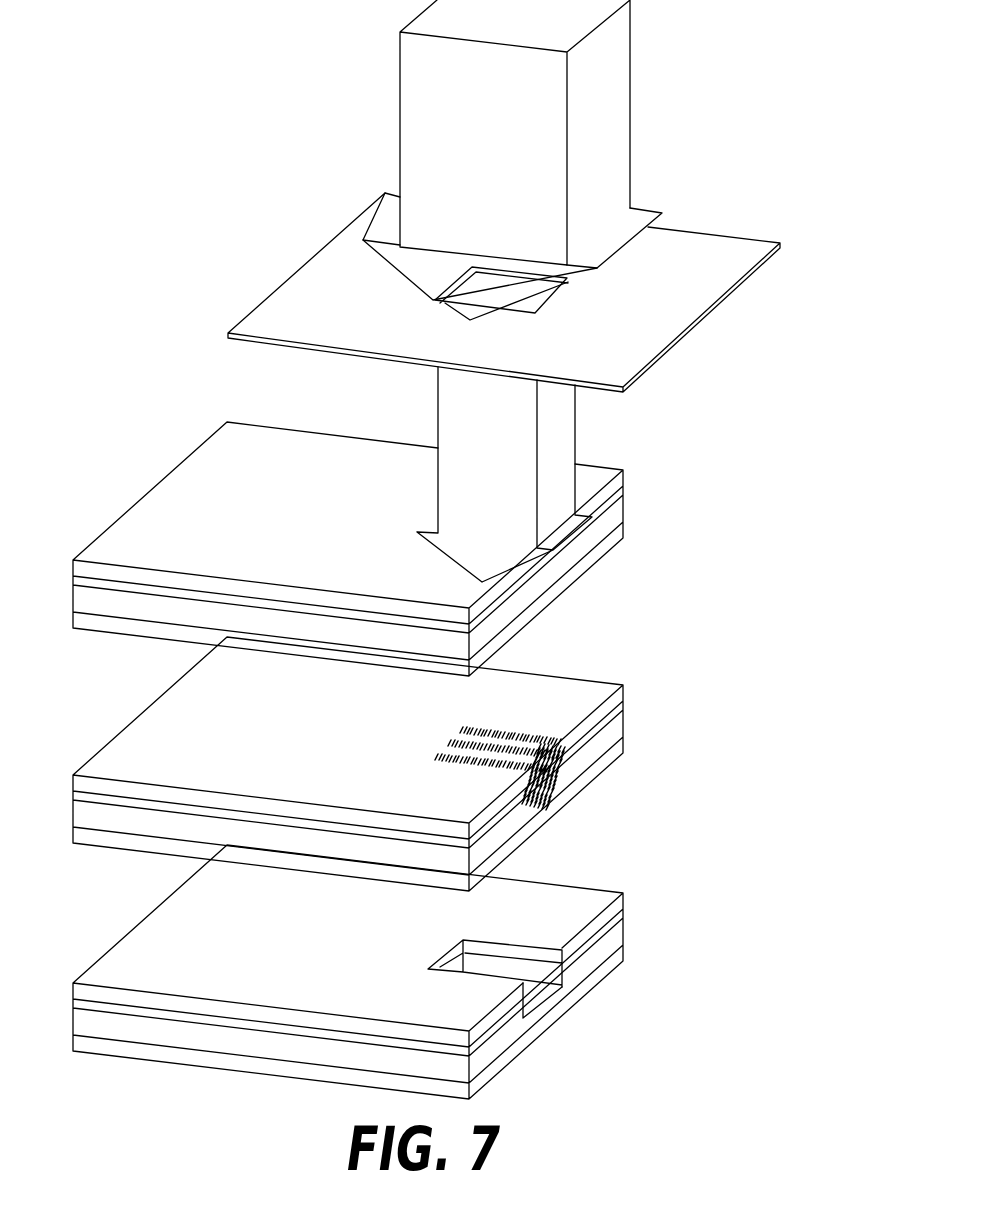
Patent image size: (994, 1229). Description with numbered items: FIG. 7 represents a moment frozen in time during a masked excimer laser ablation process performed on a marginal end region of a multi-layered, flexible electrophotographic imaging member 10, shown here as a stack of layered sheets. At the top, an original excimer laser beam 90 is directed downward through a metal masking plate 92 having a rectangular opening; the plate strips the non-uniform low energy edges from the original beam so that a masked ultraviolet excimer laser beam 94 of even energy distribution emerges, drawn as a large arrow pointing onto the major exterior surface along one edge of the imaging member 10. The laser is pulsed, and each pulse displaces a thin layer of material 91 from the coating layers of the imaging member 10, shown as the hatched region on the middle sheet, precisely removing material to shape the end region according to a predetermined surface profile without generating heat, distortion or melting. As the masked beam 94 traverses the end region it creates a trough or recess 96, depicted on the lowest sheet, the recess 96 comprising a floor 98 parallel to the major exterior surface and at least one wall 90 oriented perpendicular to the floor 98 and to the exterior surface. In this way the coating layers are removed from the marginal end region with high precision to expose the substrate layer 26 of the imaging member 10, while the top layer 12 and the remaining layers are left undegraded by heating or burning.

The electrophotographic imaging member 10 is at (362, 758).
The top layer 12 is at (165, 504).
The substrate layer 26 is at (373, 764).
The original excimer laser beam 90 is at (631, 100).
The thin layer of material 91 is at (461, 731).
The metal masking plate 92 is at (755, 240).
The masked ultraviolet excimer laser beam 94 is at (576, 446).
The trough or recess 96 is at (503, 965).
The floor 98 is at (540, 997).